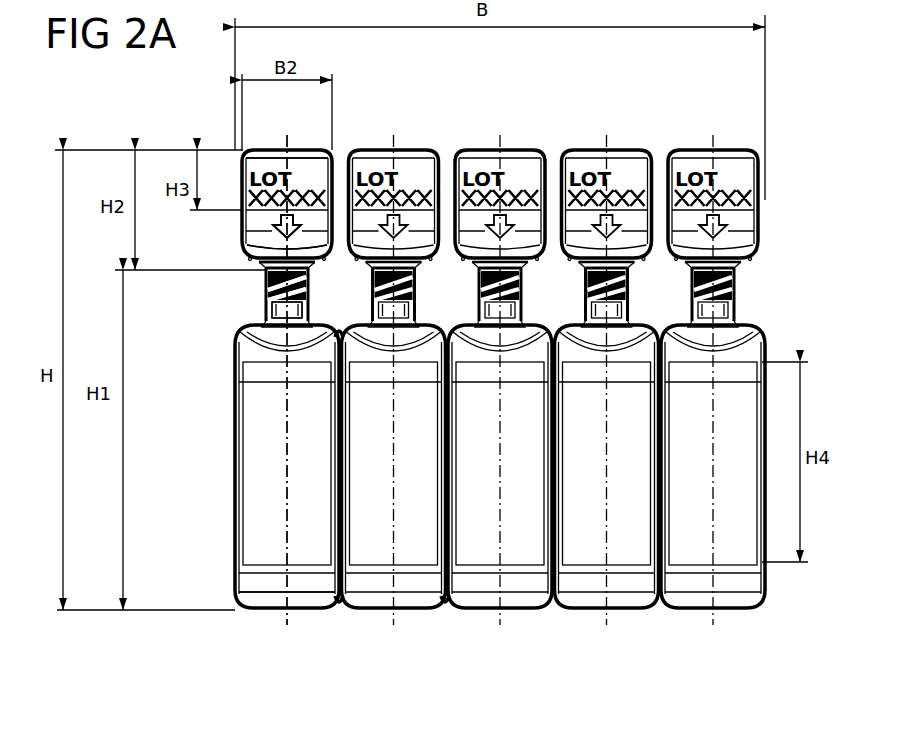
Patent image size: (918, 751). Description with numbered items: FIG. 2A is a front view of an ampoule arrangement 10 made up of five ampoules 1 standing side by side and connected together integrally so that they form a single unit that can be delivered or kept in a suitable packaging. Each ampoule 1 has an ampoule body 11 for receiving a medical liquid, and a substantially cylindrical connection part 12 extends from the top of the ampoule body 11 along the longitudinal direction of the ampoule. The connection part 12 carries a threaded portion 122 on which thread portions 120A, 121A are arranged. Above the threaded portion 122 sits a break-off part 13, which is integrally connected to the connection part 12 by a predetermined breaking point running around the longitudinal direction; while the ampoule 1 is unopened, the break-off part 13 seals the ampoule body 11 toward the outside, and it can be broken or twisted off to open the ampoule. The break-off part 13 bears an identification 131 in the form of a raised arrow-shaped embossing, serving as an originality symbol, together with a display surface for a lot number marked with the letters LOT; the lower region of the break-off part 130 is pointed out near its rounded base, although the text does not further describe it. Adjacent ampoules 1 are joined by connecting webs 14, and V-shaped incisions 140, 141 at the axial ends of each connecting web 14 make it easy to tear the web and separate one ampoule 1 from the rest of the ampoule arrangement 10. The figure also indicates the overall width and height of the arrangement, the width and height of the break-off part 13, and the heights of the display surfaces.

The ampoule 1 is at (287, 418).
The ampoule arrangement 10 is at (449, 418).
The ampoule body 11 is at (287, 380).
The connection part 12 is at (287, 294).
The thread portion 120A is at (287, 283).
The thread portion 121A is at (287, 294).
The threaded portion 122 is at (287, 310).
The break-off part 13 is at (287, 205).
The head gripping portion 130 is at (287, 247).
The identification 131 is at (287, 226).
The connecting web 14 is at (345, 607).
The V-shaped incision 140 is at (337, 607).
The V-shaped incision 141 is at (391, 310).